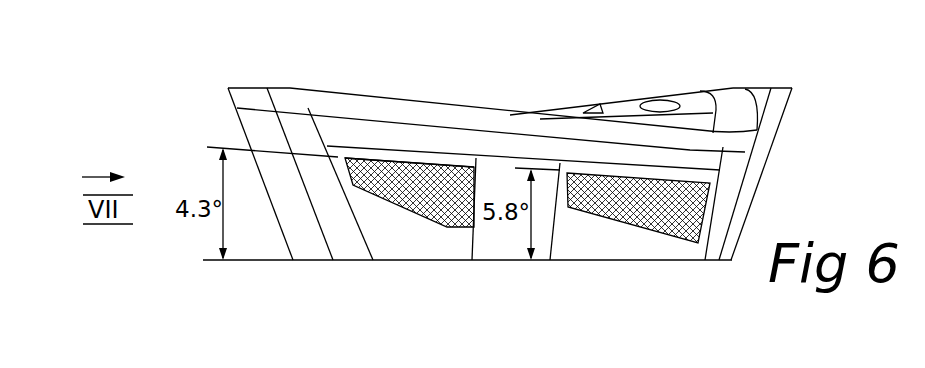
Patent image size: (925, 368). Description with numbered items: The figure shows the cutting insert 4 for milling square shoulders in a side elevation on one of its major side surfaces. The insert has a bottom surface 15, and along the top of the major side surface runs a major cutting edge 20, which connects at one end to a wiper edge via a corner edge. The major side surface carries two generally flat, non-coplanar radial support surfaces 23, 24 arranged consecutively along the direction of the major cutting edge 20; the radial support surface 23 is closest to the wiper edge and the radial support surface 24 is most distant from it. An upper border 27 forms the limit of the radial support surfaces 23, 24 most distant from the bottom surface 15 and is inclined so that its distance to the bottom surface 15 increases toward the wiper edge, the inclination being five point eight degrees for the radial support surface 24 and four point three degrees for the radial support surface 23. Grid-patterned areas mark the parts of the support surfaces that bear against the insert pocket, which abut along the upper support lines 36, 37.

The cutting insert 4 is at (760, 76).
The bottom surface 15 is at (493, 260).
The major cutting edge 20 is at (342, 93).
The radial support surface 23 is at (402, 238).
The radial support surface 24 is at (608, 240).
The upper border 27 is at (418, 152).
The upper support line 36 is at (438, 157).
The upper support line 37 is at (660, 182).